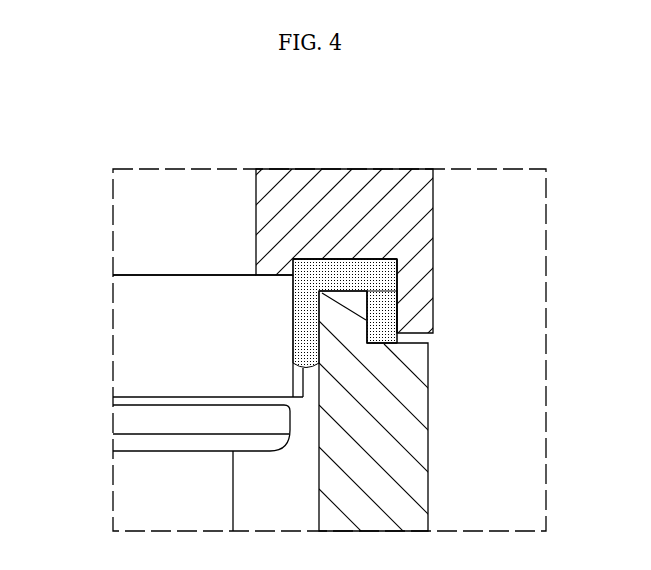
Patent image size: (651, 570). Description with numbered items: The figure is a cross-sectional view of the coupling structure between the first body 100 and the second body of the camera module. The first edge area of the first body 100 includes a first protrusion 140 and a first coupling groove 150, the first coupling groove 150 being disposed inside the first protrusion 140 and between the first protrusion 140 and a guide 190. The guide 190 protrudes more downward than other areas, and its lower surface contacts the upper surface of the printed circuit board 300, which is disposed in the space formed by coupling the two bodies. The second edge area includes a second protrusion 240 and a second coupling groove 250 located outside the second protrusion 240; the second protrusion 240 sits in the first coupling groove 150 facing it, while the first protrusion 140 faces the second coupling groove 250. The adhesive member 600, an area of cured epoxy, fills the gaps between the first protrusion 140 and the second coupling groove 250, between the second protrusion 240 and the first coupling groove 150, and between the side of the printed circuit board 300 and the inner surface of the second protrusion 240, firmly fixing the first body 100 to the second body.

The first body 100 is at (397, 200).
The first protrusion 140 is at (397, 297).
The first coupling groove 150 is at (348, 272).
The guide 190 is at (268, 270).
The second protrusion 240 is at (343, 322).
The second coupling groove 250 is at (388, 322).
The printed circuit board 300 is at (167, 335).
The adhesive member 600 is at (322, 273).